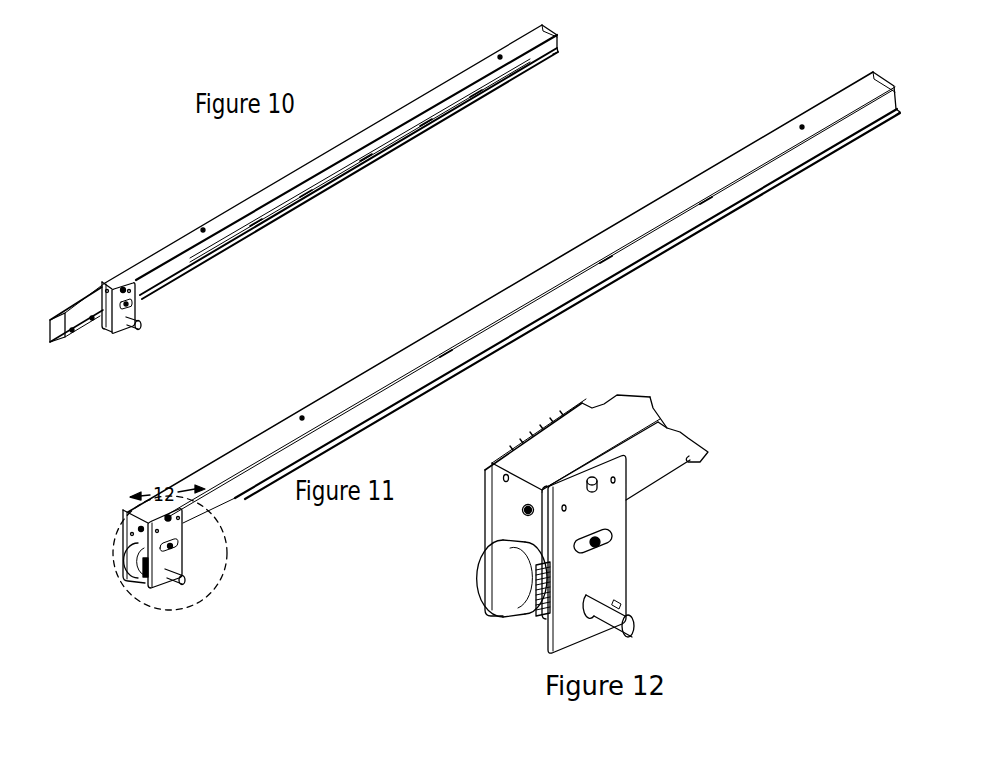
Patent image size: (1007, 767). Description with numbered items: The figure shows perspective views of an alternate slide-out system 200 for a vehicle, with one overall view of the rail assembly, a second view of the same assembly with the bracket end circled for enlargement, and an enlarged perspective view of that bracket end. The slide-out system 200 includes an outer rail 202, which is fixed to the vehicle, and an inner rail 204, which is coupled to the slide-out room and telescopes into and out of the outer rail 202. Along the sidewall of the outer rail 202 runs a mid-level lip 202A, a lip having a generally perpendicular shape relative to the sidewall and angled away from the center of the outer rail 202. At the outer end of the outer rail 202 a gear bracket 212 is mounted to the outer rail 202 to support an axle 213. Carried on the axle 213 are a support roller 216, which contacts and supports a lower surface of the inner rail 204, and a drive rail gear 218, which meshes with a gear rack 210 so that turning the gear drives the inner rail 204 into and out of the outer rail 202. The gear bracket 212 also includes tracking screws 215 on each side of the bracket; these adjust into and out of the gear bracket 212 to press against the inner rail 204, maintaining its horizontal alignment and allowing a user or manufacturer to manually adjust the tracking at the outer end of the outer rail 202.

In FIG. 10, the slide-out system 200 is at (70, 374).
In FIG. 11, the slide-out system 200 is at (268, 596).
In FIG. 10, the outer rail 202 is at (233, 207).
In FIG. 11, the outer rail 202 is at (430, 335).
In FIG. 12, the outer rail 202 is at (688, 462).
In FIG. 10, the mid-level lip 202A is at (500, 80).
In FIG. 11, the mid-level lip 202A is at (685, 233).
In FIG. 10, the inner rail 204 is at (87, 330).
In FIG. 10, the gear rack 210 is at (323, 197).
In FIG. 10, the gear bracket 212 is at (137, 308).
In FIG. 11, the gear bracket 212 is at (123, 538).
In FIG. 12, the gear bracket 212 is at (618, 572).
In FIG. 10, the axle 213 is at (133, 323).
In FIG. 11, the axle 213 is at (183, 576).
In FIG. 12, the axle 213 is at (633, 622).
In FIG. 11, the tracking screws 215 is at (175, 546).
In FIG. 12, the tracking screws 215 is at (612, 547).
In FIG. 11, the support roller 216 is at (133, 572).
In FIG. 12, the support roller 216 is at (517, 607).
In FIG. 11, the drive rail gear 218 is at (147, 580).
In FIG. 12, the drive rail gear 218 is at (542, 613).